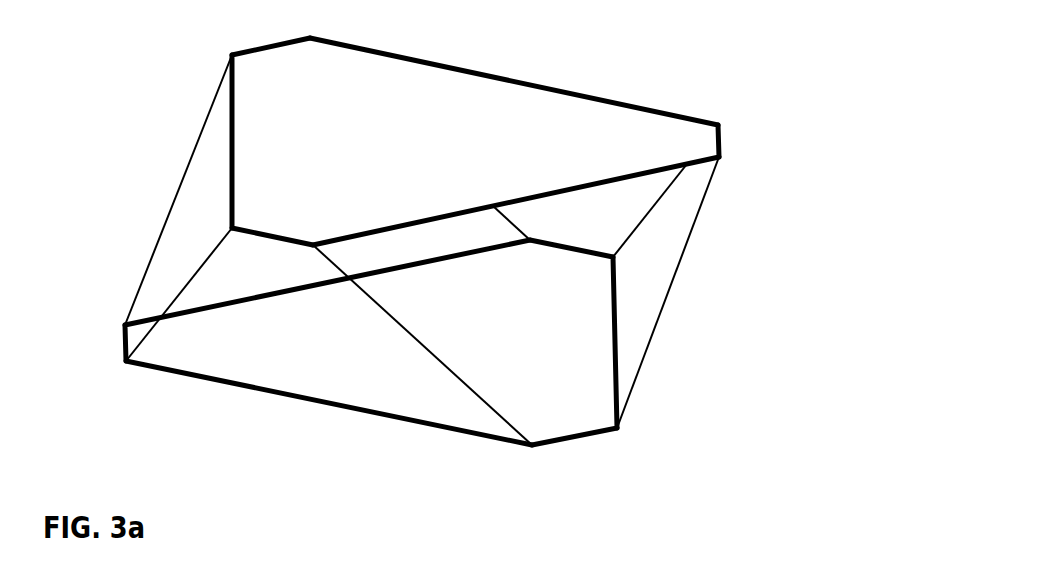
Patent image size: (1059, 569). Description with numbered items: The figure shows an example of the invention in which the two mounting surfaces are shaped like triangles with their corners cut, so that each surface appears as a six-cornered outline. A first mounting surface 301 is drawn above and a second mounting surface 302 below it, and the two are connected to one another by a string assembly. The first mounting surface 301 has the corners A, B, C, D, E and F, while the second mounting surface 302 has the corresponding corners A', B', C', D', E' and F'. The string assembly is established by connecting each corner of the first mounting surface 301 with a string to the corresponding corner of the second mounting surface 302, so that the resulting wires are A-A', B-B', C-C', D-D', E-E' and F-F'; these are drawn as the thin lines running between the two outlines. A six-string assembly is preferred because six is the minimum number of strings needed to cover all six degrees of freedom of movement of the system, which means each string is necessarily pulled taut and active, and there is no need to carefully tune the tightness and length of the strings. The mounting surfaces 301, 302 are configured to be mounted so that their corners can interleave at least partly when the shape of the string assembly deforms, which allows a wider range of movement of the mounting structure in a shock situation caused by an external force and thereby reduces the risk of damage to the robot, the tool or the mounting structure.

The first mounting surface 301 is at (453, 82).
The second mounting surface 302 is at (282, 380).
The corner of the first mounting surface A is at (225, 43).
The corner of the first mounting surface B is at (318, 24).
The corner of the first mounting surface C is at (730, 117).
The corner of the first mounting surface D is at (731, 167).
The corner of the first mounting surface E is at (306, 259).
The corner of the first mounting surface F is at (239, 245).
The corner of the second mounting surface A' is at (112, 317).
The corner of the second mounting surface B' is at (544, 225).
The corner of the second mounting surface C' is at (615, 241).
The corner of the second mounting surface D' is at (633, 445).
The corner of the second mounting surface E' is at (533, 461).
The corner of the second mounting surface F' is at (113, 365).